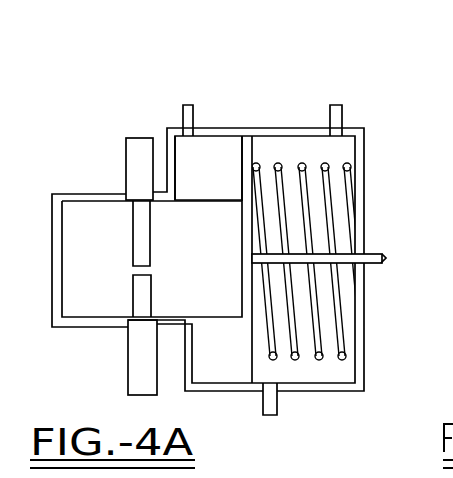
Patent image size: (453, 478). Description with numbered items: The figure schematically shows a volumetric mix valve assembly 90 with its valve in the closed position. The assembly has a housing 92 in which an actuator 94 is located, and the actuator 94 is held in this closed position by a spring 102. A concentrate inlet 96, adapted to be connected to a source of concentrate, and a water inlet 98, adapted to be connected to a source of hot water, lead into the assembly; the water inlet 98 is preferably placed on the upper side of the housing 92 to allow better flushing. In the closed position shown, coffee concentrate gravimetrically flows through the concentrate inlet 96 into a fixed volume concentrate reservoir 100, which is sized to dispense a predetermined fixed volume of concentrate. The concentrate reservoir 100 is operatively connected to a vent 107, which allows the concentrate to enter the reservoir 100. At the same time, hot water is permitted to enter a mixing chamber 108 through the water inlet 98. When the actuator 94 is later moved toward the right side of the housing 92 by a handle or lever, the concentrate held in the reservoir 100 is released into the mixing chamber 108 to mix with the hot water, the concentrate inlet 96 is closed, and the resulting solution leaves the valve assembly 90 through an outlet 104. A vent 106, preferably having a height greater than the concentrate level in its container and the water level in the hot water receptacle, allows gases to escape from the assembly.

The volumetric mix valve assembly 90 is at (160, 88).
The housing 92 is at (261, 128).
The actuator 94 is at (386, 254).
The concentrate inlet 96 is at (137, 335).
The water inlet 98 is at (188, 105).
The fixed volume concentrate reservoir 100 is at (135, 220).
The spring 102 is at (346, 357).
The outlet 104 is at (276, 415).
The vent 106 is at (337, 105).
The vent 107 is at (142, 138).
The mixing chamber 108 is at (210, 148).